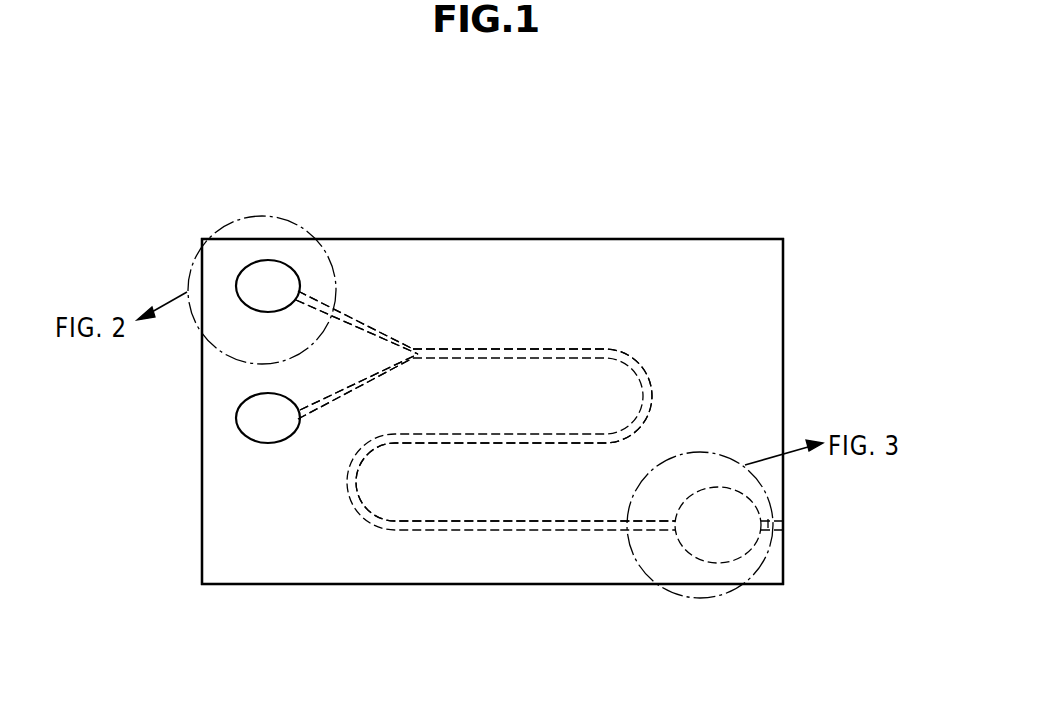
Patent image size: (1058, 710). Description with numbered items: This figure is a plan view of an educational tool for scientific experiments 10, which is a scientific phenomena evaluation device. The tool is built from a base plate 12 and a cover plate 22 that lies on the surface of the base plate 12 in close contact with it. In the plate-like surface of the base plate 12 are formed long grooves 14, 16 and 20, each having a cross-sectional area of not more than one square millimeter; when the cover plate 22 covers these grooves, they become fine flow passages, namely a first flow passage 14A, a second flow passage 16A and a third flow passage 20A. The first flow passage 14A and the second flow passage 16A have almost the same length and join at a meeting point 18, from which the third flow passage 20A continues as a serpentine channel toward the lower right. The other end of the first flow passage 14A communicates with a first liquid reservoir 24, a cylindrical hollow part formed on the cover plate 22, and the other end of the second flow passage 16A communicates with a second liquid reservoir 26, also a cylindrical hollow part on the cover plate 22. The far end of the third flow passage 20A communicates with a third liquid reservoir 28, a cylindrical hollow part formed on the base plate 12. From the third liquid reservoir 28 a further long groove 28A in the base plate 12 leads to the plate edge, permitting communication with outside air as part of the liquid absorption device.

The educational tool for scientific experiments 10 is at (536, 200).
The base plate 12 is at (783, 310).
The cover plate 22 is at (492, 411).
The long groove 14 is at (358, 312).
The first flow passage 14A is at (357, 322).
The long groove 16 is at (323, 415).
The second flow passage 16A is at (358, 386).
The meeting point 18 is at (414, 348).
The long groove 20 is at (570, 348).
The third flow passage 20A is at (515, 435).
The first liquid reservoir 24 is at (290, 281).
The second liquid reservoir 26 is at (258, 443).
The third liquid reservoir 28 is at (698, 545).
The long groove 28A is at (783, 524).